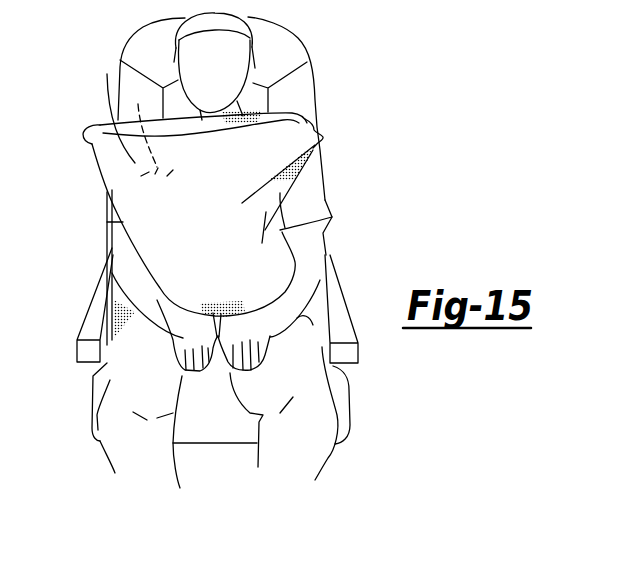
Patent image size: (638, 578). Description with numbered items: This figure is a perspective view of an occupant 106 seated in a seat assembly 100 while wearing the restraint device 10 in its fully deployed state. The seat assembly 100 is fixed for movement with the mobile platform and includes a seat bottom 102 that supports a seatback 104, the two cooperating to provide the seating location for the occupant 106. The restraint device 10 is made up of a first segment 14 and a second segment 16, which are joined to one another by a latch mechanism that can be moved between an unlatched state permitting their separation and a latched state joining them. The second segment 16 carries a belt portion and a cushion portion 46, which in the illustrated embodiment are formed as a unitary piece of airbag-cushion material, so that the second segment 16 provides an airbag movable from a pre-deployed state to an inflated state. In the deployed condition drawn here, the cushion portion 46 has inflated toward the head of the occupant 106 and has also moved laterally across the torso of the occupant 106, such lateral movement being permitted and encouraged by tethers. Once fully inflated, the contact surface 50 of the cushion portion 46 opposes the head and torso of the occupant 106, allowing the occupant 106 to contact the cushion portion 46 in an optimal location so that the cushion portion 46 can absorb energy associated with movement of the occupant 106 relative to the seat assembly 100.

The restraint device 10 is at (102, 113).
The first segment 14 is at (118, 311).
The second segment 16 is at (320, 304).
The cushion portion 46 is at (116, 107).
The contact surface 50 is at (152, 127).
The seat assembly 100 is at (318, 47).
The seat bottom 102 is at (342, 427).
The seatback 104 is at (307, 80).
The occupant 106 is at (325, 205).